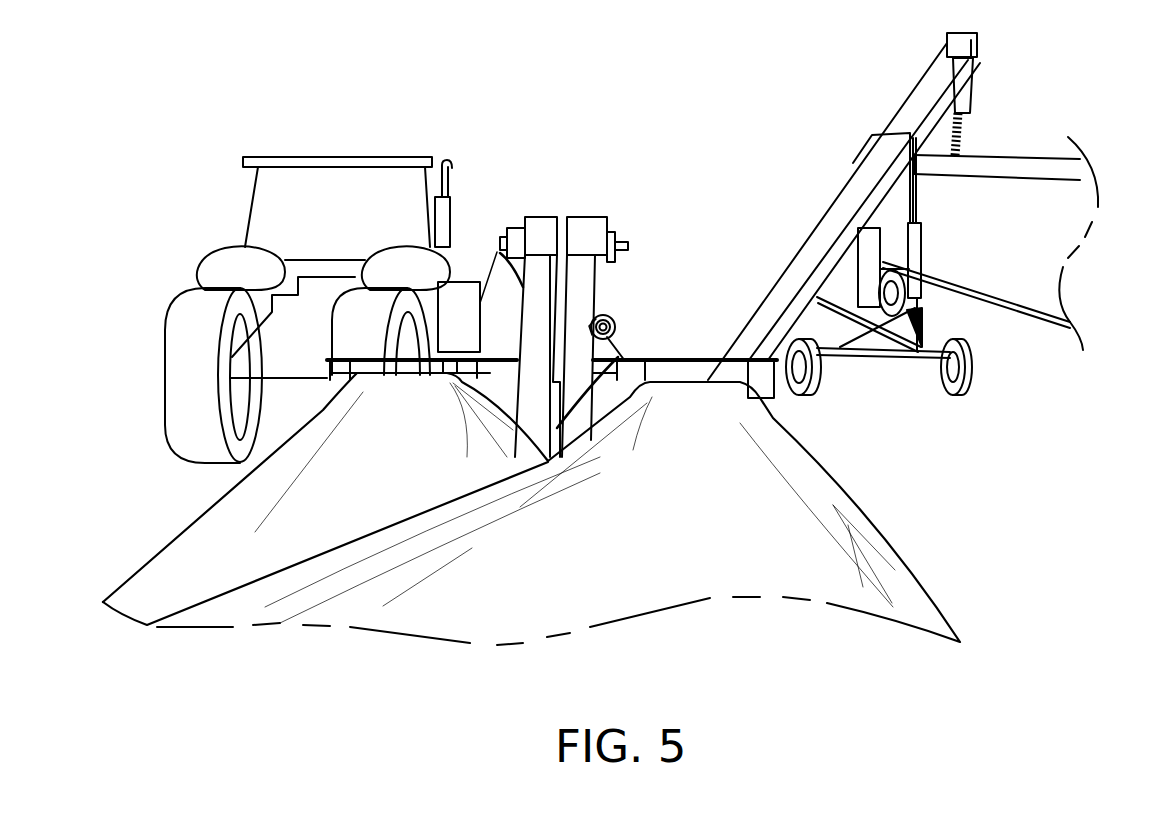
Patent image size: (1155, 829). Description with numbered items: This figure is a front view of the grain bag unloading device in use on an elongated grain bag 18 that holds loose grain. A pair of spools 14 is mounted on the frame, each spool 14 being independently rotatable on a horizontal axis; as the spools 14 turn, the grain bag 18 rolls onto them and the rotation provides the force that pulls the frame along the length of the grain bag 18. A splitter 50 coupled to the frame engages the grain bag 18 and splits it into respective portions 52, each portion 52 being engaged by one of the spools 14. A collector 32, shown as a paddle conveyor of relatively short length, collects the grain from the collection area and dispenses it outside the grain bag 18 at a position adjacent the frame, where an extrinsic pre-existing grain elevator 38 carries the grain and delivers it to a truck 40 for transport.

The spool 14 is at (492, 360).
The grain bag 18 is at (442, 610).
The collector 32 is at (590, 325).
The grain elevator 38 is at (872, 177).
The truck 40 is at (1017, 187).
The splitter 50 is at (605, 358).
The portions 52 is at (370, 450).